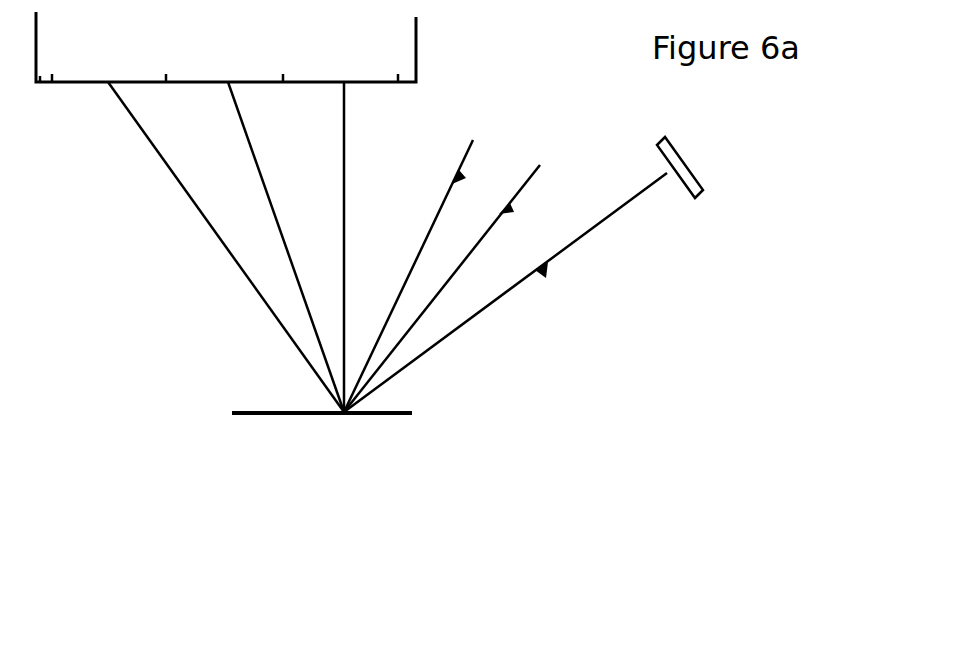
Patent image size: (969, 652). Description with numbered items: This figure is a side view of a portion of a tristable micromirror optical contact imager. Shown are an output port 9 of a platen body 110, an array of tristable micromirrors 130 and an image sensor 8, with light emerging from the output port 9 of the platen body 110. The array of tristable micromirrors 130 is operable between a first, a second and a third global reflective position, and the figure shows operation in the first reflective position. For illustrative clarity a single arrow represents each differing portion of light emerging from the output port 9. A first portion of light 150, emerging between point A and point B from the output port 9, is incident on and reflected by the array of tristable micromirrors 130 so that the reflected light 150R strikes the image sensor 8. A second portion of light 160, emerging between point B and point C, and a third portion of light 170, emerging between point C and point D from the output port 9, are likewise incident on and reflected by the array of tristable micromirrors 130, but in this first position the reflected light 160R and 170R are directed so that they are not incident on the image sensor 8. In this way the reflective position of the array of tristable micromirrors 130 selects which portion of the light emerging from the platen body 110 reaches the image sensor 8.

The platen body 110 is at (417, 40).
The output port 9 is at (45, 84).
The first portion of light 150 is at (192, 205).
The second portion of light 160 is at (240, 112).
The third portion of light 170 is at (346, 100).
The array of tristable micromirrors 130 is at (268, 416).
The reflected light 150R is at (575, 243).
The reflected light 160R is at (528, 178).
The reflected light 170R is at (467, 152).
The image sensor 8 is at (702, 192).